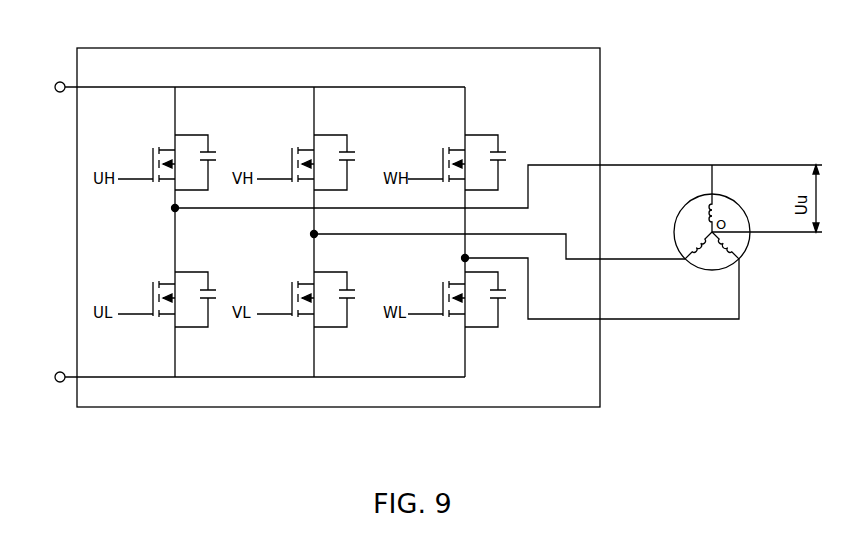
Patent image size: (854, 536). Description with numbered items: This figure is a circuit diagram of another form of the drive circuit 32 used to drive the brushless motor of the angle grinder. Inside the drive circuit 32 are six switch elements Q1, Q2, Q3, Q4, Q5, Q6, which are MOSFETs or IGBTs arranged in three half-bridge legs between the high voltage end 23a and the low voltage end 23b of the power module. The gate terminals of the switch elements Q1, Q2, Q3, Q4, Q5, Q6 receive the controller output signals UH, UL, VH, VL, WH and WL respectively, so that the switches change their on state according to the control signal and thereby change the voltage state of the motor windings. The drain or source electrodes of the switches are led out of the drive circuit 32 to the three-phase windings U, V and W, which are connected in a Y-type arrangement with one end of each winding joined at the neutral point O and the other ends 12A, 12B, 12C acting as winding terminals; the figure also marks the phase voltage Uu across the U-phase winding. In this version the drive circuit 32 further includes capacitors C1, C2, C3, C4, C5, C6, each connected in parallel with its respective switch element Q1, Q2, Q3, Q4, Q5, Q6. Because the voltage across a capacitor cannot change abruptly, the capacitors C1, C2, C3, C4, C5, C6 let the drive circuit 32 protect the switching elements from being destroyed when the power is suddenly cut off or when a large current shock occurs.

The drive circuit 32 is at (533, 65).
The high voltage end 23a is at (243, 87).
The low voltage end 23b is at (243, 377).
The end of the U-phase winding 12A is at (498, 189).
The end of the V-phase winding 12B is at (513, 256).
The end of the W-phase winding 12C is at (620, 275).
The switch element Q1 is at (146, 164).
The switch element Q2 is at (146, 299).
The switch element Q3 is at (285, 164).
The switch element Q4 is at (285, 299).
The switch element Q5 is at (436, 164).
The switch element Q6 is at (436, 299).
The capacitor C1 is at (207, 162).
The capacitor C2 is at (207, 299).
The capacitor C3 is at (346, 162).
The capacitor C4 is at (346, 299).
The capacitor C5 is at (497, 162).
The capacitor C6 is at (496, 299).